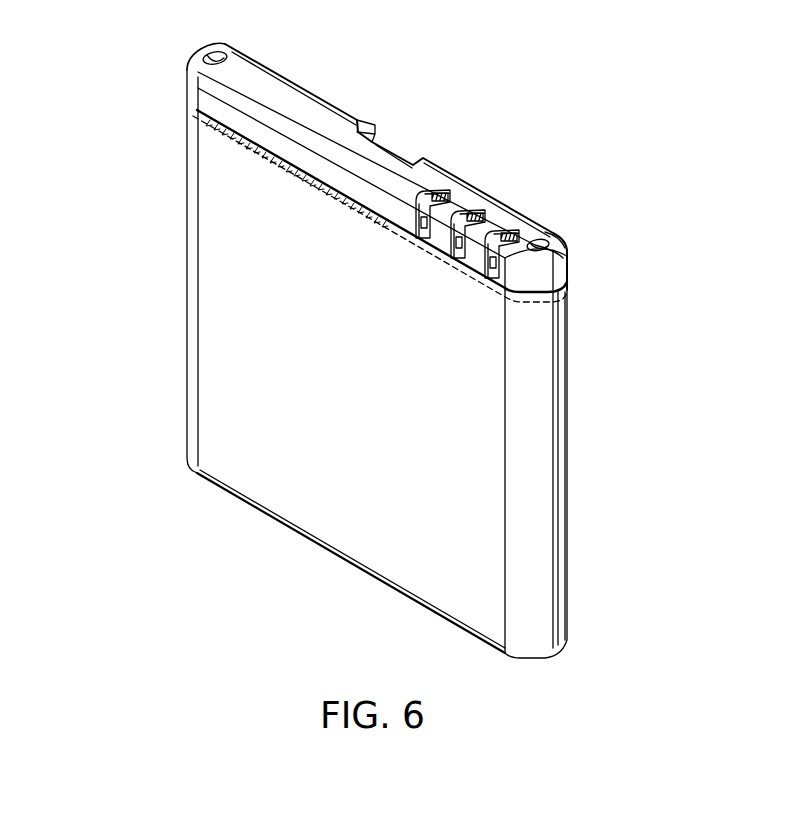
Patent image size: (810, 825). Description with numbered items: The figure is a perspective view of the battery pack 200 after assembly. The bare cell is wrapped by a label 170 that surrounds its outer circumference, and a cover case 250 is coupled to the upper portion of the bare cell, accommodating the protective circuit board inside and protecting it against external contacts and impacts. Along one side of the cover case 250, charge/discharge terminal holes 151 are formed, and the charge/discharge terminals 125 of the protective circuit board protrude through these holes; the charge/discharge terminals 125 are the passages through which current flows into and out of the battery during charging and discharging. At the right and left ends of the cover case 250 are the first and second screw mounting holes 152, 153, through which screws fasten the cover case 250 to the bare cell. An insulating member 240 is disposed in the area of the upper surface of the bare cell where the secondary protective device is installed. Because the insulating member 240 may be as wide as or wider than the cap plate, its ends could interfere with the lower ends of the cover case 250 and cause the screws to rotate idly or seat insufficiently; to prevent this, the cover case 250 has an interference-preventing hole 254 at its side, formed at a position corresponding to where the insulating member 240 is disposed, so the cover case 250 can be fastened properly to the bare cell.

The battery pack 200 is at (623, 57).
The cover case 250 is at (340, 90).
The first screw mounting hole 152 is at (219, 54).
The charge/discharge terminal holes 151 is at (541, 239).
The second screw mounting hole 153 is at (556, 238).
The insulating member 240 is at (232, 139).
The interference-preventing hole 254 is at (233, 141).
The charge/discharge terminals 125 is at (497, 233).
The label 170 is at (338, 543).